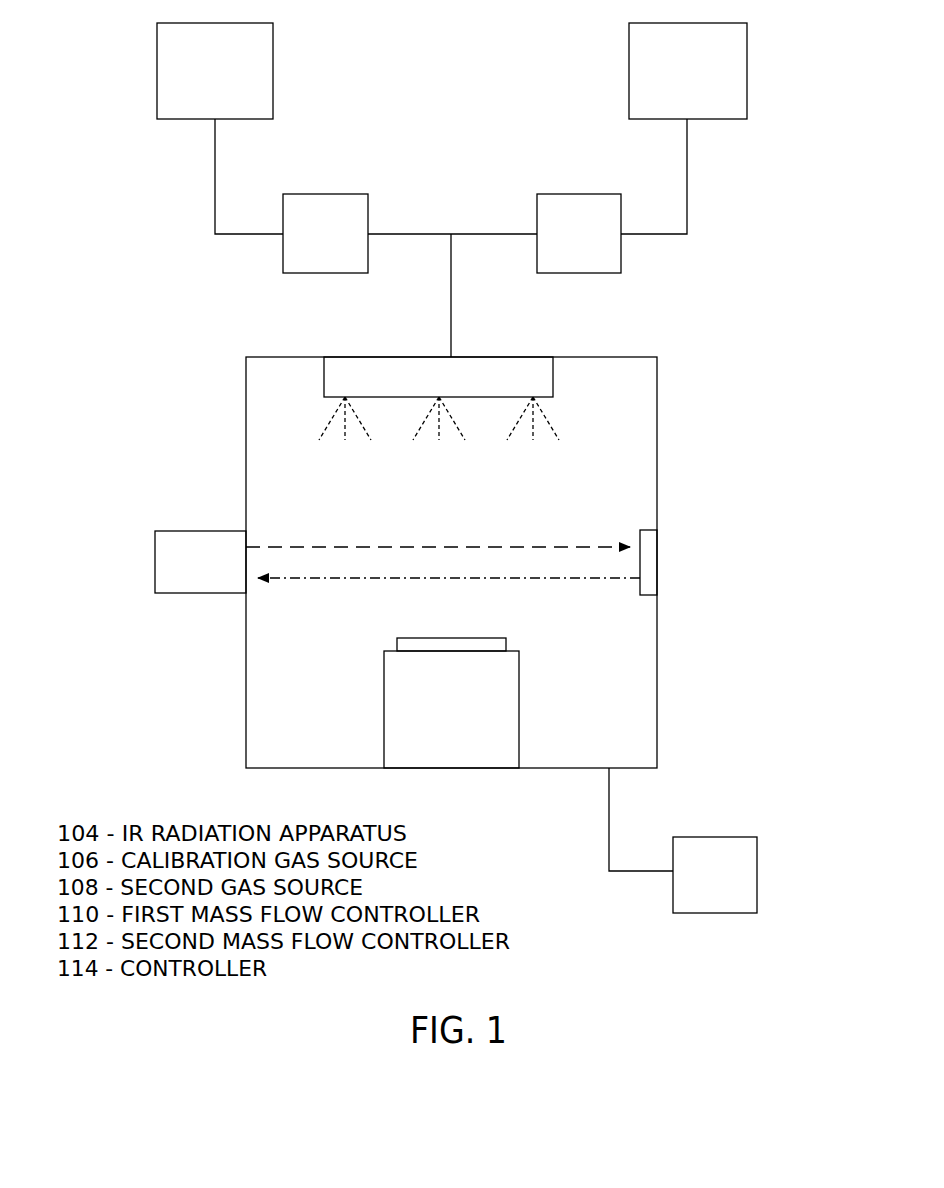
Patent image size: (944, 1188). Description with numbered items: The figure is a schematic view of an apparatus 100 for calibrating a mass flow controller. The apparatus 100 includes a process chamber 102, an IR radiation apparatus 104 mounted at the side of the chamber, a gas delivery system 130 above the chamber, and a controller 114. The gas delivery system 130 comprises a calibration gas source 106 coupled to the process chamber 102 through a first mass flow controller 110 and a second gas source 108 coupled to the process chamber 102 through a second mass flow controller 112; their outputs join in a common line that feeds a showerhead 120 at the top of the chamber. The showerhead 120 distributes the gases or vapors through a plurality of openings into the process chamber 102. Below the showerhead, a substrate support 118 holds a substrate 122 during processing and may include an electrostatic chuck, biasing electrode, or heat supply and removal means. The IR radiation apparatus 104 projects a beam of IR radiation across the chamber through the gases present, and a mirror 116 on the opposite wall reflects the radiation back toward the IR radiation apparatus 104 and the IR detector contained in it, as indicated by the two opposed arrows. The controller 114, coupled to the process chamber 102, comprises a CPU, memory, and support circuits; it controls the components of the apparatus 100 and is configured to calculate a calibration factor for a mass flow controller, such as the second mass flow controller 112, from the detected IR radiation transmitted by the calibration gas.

The apparatus 100 is at (198, 442).
The process chamber 102 is at (657, 680).
The IR radiation apparatus 104 is at (181, 574).
The calibration gas source 106 is at (196, 82).
The second gas source 108 is at (669, 82).
The first mass flow controller 110 is at (306, 243).
The second mass flow controller 112 is at (560, 243).
The controller 114 is at (696, 886).
The mirror 116 is at (650, 530).
The substrate support 118 is at (432, 721).
The showerhead 120 is at (553, 375).
The substrate 122 is at (463, 638).
The gas delivery system 130 is at (126, 145).